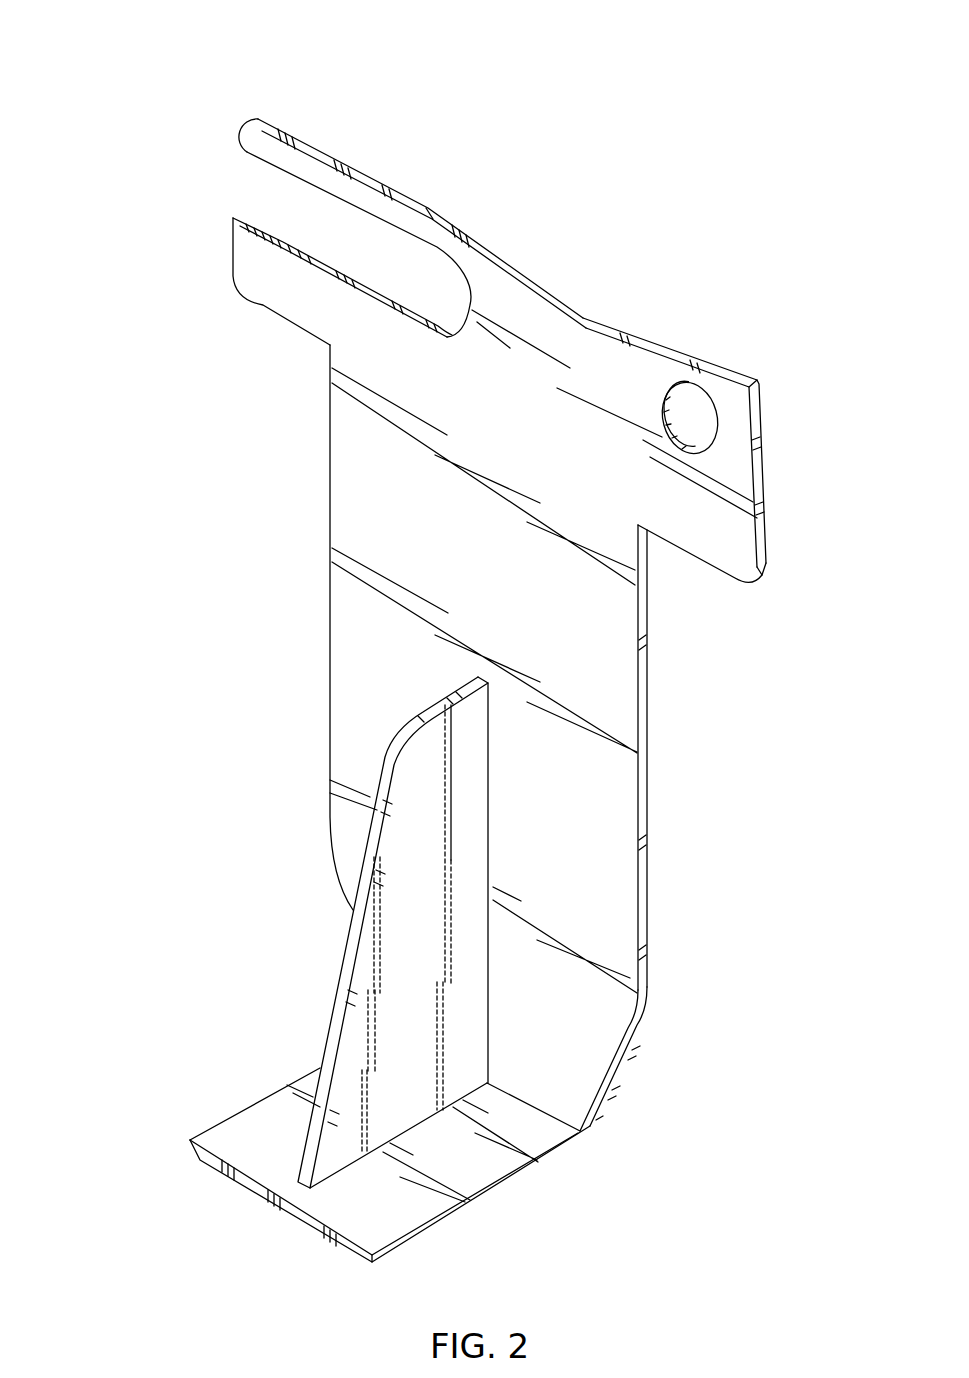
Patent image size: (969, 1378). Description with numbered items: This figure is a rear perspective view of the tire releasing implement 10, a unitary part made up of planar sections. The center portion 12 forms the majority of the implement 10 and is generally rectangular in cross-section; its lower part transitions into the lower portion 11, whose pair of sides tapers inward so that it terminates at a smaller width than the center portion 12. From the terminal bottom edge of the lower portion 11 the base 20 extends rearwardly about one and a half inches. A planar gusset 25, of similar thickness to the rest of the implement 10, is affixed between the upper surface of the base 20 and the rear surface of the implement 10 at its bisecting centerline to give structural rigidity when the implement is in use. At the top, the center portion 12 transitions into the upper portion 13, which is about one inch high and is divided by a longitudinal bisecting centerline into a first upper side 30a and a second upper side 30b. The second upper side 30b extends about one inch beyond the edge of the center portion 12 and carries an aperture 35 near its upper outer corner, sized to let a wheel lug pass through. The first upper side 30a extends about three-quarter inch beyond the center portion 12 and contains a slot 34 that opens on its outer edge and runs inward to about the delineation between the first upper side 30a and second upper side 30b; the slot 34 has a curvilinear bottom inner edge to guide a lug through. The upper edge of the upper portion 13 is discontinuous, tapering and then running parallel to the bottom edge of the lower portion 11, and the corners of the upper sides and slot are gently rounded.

The tire releasing implement 10 is at (139, 197).
The lower portion 11 is at (545, 1029).
The center portion 12 is at (565, 773).
The upper portion 13 is at (497, 416).
The base 20 is at (472, 1177).
The planar gusset 25 is at (355, 1030).
The first upper side 30a is at (295, 288).
The second upper side 30b is at (707, 528).
The slot 34 is at (307, 225).
The aperture 35 is at (697, 416).